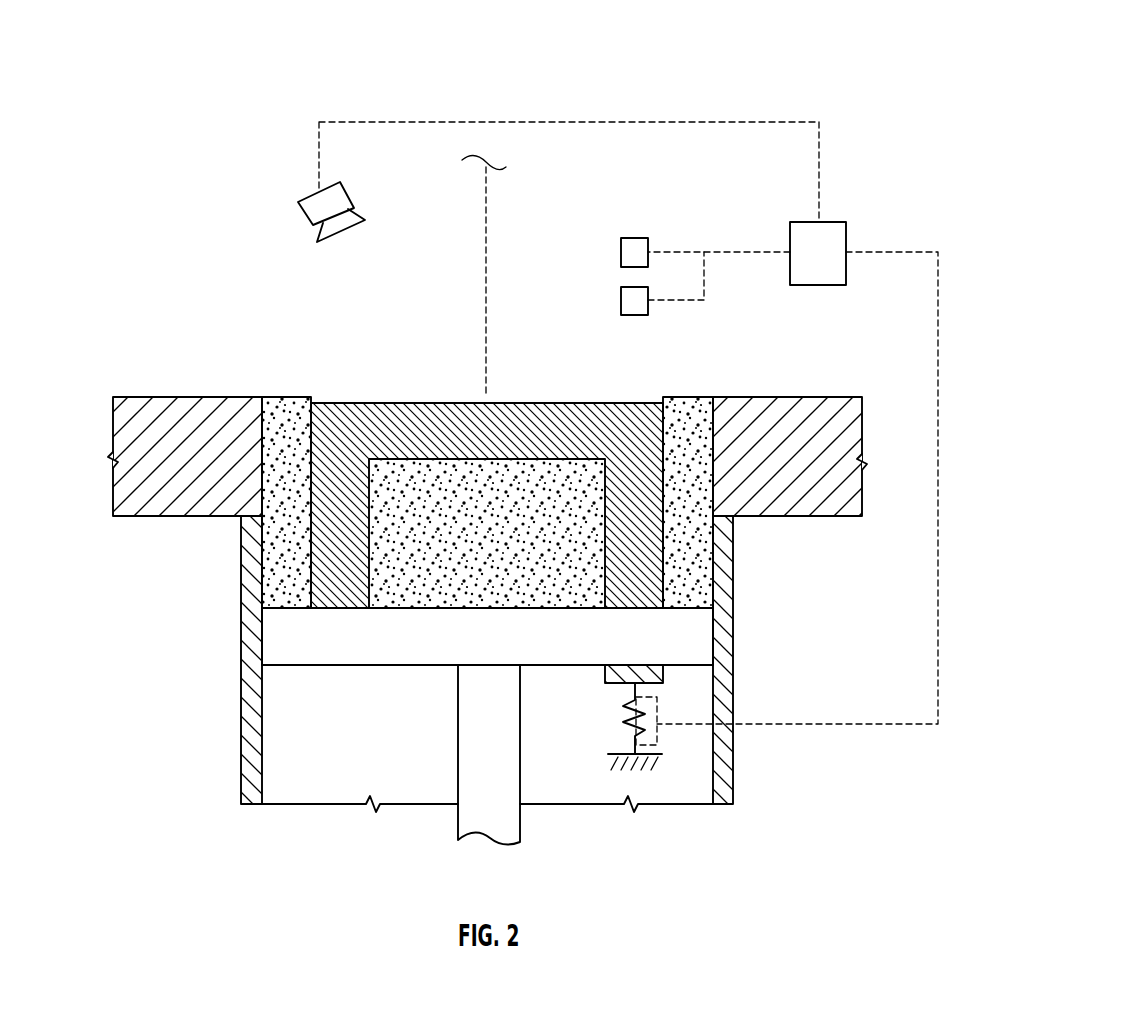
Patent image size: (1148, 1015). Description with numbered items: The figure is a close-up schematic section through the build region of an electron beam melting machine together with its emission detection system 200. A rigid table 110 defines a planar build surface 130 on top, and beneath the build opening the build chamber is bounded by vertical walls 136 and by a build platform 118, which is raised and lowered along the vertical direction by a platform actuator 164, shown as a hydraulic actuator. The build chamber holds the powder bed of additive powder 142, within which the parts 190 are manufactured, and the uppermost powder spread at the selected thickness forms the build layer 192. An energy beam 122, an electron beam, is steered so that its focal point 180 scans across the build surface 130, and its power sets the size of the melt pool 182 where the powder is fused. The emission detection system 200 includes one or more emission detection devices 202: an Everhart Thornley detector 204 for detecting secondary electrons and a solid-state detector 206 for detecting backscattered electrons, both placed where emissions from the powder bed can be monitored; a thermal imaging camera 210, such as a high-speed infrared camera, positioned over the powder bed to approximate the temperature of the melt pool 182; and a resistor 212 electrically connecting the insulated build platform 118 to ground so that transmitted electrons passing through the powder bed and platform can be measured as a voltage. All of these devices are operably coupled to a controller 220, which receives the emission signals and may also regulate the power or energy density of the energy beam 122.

The table 110 is at (128, 478).
The build platform 118 is at (497, 651).
The energy beam 122 is at (486, 200).
The planar build surface 130 is at (125, 395).
The vertical walls 136 is at (733, 641).
The additive powder 142 is at (302, 543).
The platform actuator 164 is at (520, 750).
The focal point 180 is at (485, 397).
The melt pool 182 is at (482, 397).
The parts 190 is at (647, 395).
The build layer 192 is at (345, 396).
The emission detection system 200 is at (781, 98).
The emission detection devices 202 is at (312, 228).
The Everhart Thornley detector 204 is at (624, 238).
The solid-state detector 206 is at (648, 310).
The thermal imaging camera 210 is at (300, 200).
The resistor 212 is at (630, 725).
The controller 220 is at (837, 270).